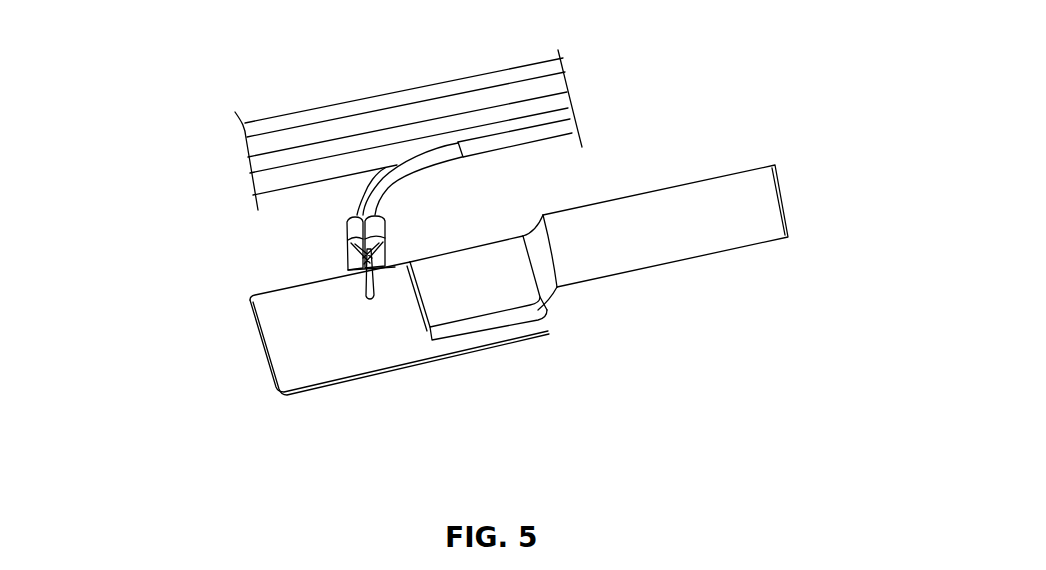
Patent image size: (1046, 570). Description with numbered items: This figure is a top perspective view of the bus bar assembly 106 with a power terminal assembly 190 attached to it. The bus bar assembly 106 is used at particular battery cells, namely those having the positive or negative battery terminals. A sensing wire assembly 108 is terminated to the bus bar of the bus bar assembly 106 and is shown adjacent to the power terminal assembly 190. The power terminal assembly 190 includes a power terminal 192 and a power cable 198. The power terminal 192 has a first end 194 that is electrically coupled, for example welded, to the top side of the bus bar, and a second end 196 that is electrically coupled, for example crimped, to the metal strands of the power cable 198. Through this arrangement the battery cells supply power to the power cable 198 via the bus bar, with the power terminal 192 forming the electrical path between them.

The bus bar assembly 106 is at (302, 395).
The sensing wire assembly 108 is at (332, 215).
The power terminal assembly 190 is at (605, 291).
The power terminal 192 is at (483, 285).
The first end 194 is at (443, 332).
The second end 196 is at (550, 308).
The power cable 198 is at (685, 205).